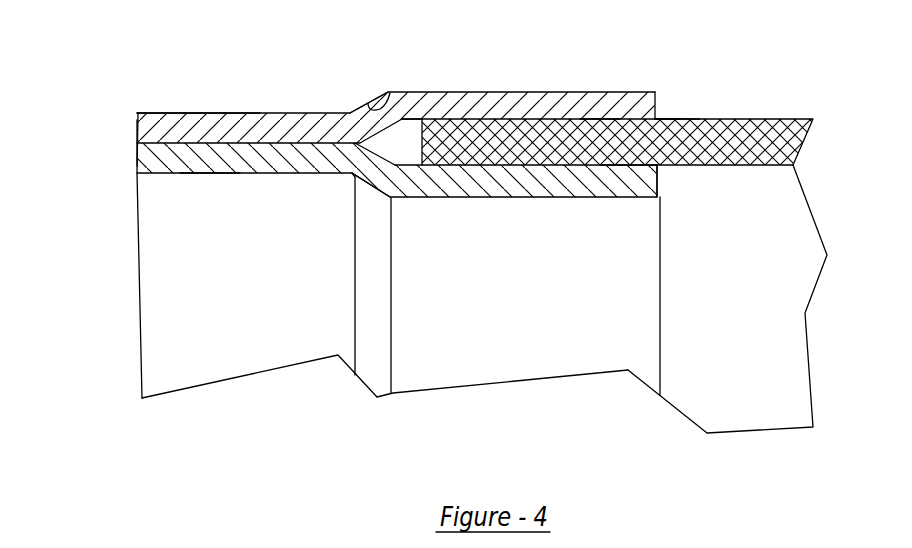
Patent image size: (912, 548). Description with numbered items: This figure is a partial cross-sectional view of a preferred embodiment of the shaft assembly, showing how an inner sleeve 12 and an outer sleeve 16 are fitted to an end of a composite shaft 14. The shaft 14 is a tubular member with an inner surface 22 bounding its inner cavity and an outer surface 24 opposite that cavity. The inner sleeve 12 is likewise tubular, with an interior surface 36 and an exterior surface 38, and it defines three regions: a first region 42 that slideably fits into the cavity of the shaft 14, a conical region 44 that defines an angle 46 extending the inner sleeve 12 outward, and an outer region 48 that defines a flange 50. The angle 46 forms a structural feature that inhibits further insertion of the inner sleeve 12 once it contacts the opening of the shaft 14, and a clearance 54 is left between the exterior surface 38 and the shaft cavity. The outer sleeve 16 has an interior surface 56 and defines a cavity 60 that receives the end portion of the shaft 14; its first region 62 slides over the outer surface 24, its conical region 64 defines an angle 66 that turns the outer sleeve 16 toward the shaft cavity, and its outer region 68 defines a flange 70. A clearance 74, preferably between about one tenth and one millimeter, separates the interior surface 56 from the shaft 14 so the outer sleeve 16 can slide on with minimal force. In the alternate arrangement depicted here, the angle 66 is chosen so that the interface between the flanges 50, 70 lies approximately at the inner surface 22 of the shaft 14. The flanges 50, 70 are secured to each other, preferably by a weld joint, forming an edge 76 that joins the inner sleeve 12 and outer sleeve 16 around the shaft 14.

The inner sleeve 12 is at (178, 160).
The composite shaft 14 is at (796, 135).
The outer sleeve 16 is at (137, 115).
The inner surface 22 is at (742, 315).
The outer surface 24 is at (485, 121).
The interior surface 36 is at (267, 275).
The exterior surface 38 is at (593, 166).
The first region 42 is at (547, 189).
The conical region 44 is at (370, 188).
The angle 46 is at (353, 177).
The outer region 48 is at (248, 166).
The flange 50 is at (230, 142).
The clearance 54 is at (662, 166).
The interior surface 56 is at (582, 124).
The cavity 60 is at (401, 117).
The first region 62 is at (553, 100).
The conical region 64 is at (389, 90).
The angle 66 is at (380, 82).
The outer region 68 is at (258, 117).
The flange 70 is at (230, 142).
The clearance 74 is at (655, 119).
The edge 76 is at (122, 114).